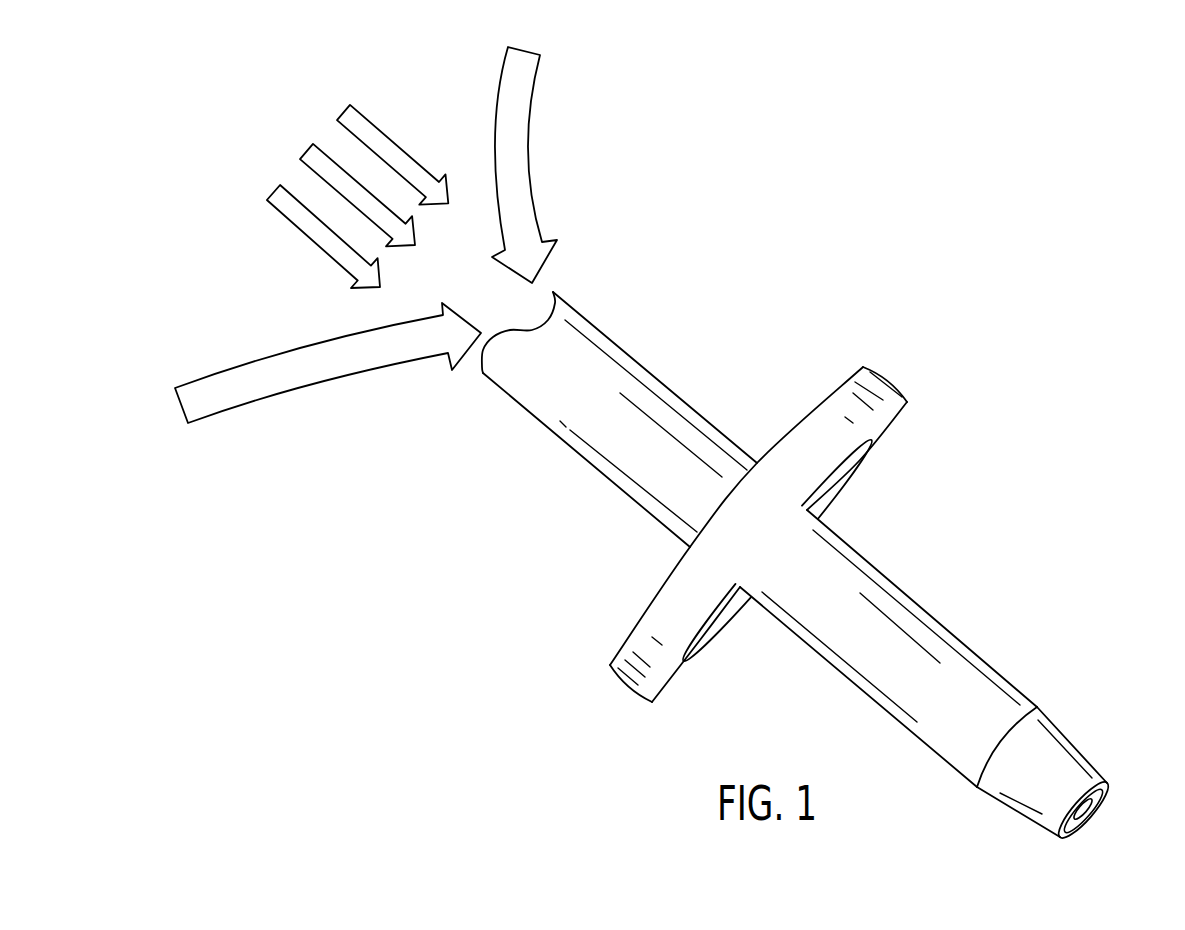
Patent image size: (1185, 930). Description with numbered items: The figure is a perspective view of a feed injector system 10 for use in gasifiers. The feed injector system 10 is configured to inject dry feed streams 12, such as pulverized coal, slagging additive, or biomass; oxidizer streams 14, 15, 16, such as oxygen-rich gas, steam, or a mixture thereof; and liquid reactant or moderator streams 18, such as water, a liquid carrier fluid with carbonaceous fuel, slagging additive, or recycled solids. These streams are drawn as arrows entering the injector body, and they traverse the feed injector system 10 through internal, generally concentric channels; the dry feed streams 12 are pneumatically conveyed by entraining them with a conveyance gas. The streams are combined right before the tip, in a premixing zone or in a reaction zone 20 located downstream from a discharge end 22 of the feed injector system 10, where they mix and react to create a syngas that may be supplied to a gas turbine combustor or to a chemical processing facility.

The feed injector system 10 is at (650, 85).
The dry feed stream 12 is at (242, 365).
The oxidizer stream 14 is at (270, 213).
The oxidizer stream 15 is at (303, 173).
The oxidizer stream 16 is at (340, 127).
The liquid reactant or moderator stream 18 is at (495, 102).
The reaction zone 20 is at (1097, 803).
The discharge end 22 is at (1093, 752).